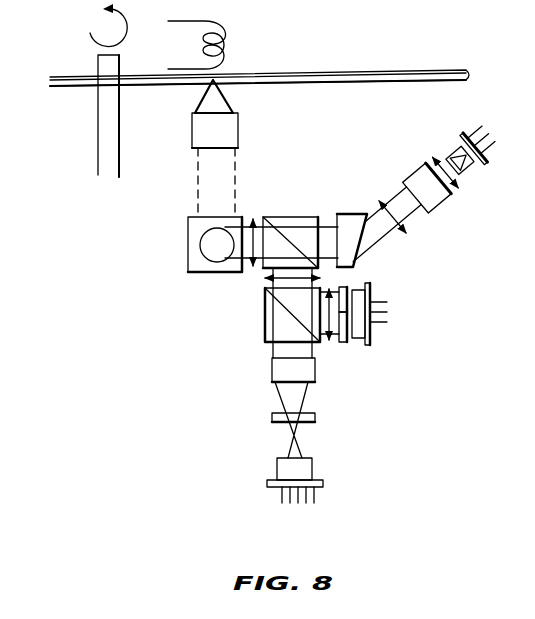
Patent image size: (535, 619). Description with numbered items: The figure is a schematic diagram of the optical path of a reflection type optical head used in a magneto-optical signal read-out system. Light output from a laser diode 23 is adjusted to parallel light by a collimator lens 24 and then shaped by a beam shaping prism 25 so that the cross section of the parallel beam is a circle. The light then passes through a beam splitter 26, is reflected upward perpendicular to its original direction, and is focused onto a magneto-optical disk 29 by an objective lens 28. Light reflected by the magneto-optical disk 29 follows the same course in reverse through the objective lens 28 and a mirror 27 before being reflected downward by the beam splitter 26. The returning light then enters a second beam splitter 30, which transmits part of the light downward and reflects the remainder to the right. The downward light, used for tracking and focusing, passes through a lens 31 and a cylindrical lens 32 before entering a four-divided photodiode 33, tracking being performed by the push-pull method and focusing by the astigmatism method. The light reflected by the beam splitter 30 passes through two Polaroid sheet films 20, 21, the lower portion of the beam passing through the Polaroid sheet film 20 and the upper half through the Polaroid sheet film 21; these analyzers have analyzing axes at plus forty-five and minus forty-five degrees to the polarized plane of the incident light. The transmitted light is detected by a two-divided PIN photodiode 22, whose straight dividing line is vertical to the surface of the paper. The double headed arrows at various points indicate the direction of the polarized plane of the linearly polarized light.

The Polaroid sheet film 20 is at (344, 343).
The Polaroid sheet film 21 is at (340, 287).
The 2-divided PIN photodiode 22 is at (369, 345).
The laser diode 23 is at (463, 134).
The collimator lens 24 is at (409, 178).
The beam shaping prism 25 is at (354, 213).
The beam splitter 26 is at (292, 218).
The mirror 27 is at (188, 221).
The objective lens 28 is at (193, 129).
The magneto-optical disk 29 is at (437, 70).
The beam splitter 30 is at (264, 331).
The lens 31 is at (270, 368).
The cylindrical lens 32 is at (272, 418).
The 4-divided photodiode 33 is at (283, 466).